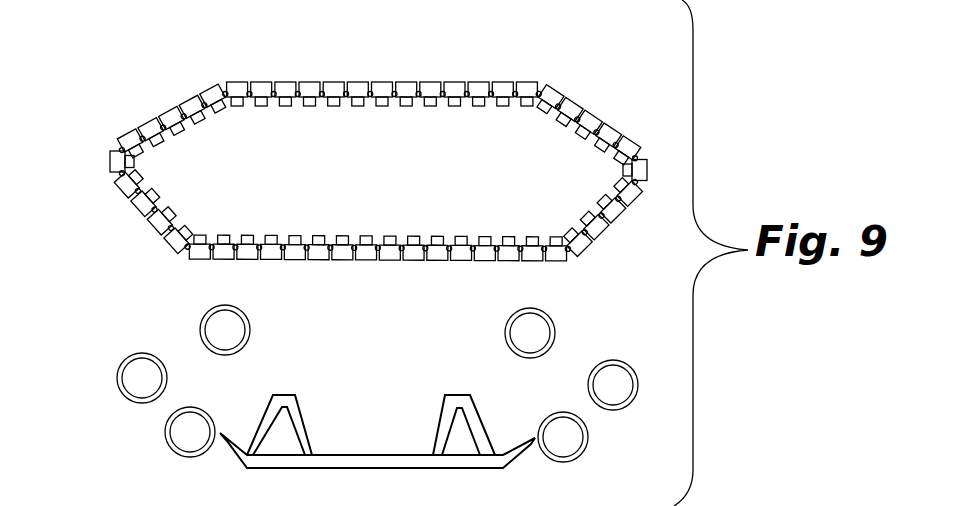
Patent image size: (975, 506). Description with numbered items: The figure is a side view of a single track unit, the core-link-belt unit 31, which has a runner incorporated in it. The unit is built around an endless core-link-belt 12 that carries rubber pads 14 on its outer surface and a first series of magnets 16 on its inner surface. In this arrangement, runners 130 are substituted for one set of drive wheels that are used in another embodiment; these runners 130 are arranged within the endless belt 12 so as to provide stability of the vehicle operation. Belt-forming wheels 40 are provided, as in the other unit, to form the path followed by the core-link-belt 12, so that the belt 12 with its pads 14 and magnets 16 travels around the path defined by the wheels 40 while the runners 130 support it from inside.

The core-link-belt unit 31 is at (133, 66).
The rubber pads 14 is at (168, 117).
The first series of magnets 16 is at (137, 135).
The core-link-belt 12 is at (122, 177).
The belt-forming wheels 40 is at (183, 420).
The runners 130 is at (376, 463).